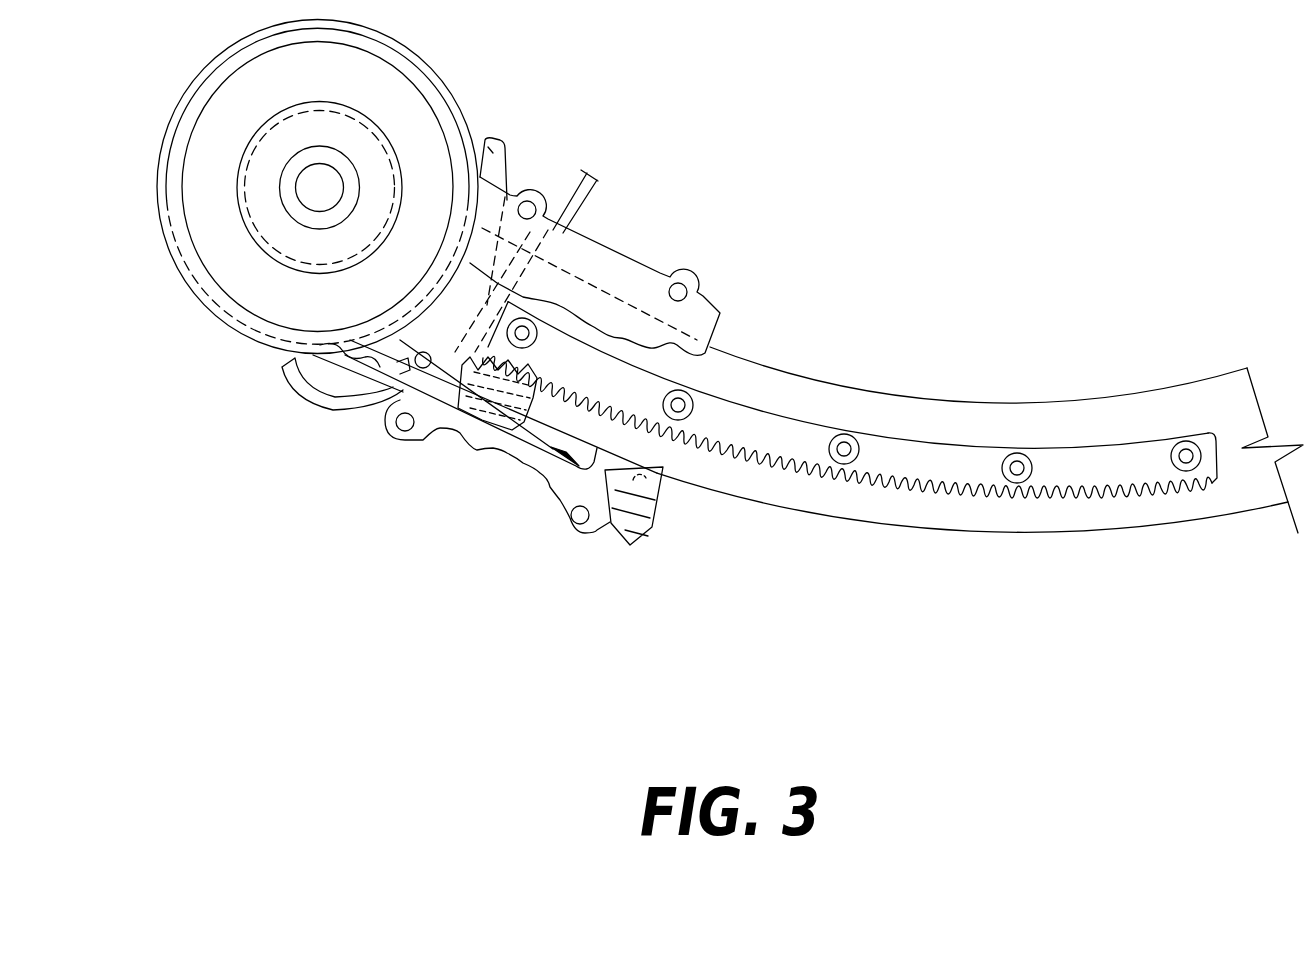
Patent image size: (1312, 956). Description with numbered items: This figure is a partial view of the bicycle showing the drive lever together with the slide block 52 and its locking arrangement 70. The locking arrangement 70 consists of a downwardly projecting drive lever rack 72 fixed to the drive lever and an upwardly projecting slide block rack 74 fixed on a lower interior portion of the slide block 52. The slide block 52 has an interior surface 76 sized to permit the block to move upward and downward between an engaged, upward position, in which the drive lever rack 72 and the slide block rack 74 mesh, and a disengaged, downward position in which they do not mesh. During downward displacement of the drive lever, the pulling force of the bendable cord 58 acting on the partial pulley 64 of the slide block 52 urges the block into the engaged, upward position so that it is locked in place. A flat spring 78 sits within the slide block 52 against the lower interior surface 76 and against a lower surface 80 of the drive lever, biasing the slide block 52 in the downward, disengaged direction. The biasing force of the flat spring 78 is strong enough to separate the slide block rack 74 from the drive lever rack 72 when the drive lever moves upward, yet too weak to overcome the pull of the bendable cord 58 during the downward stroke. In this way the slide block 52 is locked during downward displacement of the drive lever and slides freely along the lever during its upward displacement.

The slide block 52 is at (597, 278).
The bendable cord 58 is at (570, 195).
The partial pulley 64 is at (487, 140).
The locking arrangement 70 is at (513, 445).
The drive lever rack 72 is at (923, 458).
The slide block rack 74 is at (506, 392).
The interior surface 76 is at (410, 388).
The flat spring 78 is at (580, 457).
The lower surface 80 is at (310, 396).